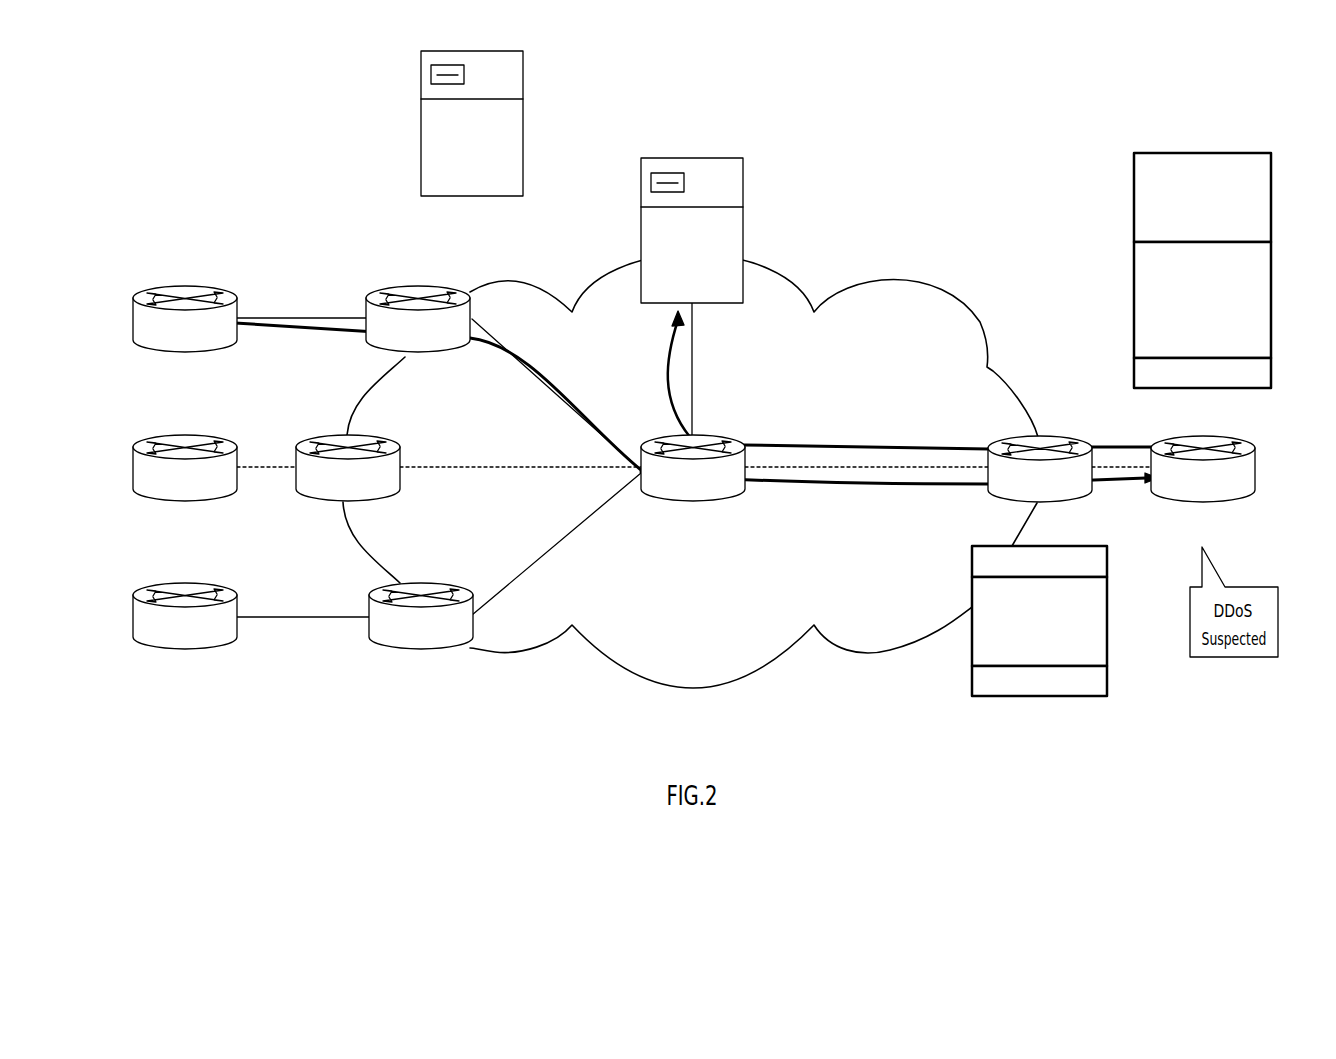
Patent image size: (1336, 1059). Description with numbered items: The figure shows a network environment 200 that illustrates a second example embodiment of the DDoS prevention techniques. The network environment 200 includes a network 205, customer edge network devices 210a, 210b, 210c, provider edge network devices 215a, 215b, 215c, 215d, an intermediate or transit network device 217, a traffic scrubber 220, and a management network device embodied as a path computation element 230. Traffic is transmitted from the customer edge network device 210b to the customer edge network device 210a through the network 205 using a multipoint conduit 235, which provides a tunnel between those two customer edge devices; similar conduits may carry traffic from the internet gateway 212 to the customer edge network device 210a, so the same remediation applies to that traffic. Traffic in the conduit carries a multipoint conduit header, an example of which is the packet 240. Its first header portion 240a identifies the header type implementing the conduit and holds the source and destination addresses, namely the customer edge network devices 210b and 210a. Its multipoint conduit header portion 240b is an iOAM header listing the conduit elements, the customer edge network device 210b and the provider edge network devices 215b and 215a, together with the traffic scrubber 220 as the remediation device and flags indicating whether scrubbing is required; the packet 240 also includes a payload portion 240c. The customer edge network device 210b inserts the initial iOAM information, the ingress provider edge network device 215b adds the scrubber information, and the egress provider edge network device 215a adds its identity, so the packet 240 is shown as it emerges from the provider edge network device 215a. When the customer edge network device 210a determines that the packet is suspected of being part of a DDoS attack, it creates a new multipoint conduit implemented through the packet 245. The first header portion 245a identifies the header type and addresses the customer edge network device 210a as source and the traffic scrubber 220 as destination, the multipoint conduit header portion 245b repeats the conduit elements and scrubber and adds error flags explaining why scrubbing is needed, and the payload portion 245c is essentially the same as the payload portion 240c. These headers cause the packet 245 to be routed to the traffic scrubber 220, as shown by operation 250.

The network environment 200 is at (1010, 68).
The network 205 is at (945, 295).
The customer edge network device 210a is at (1253, 470).
The customer edge network device 210b is at (132, 313).
The customer edge network device 210c is at (133, 467).
The internet gateway 212 is at (133, 617).
The provider edge network device 215a is at (1060, 437).
The provider edge network device 215b is at (383, 291).
The provider edge network device 215c is at (400, 455).
The provider edge network device 215d is at (425, 585).
The intermediate or transit network device 217 is at (720, 437).
The traffic scrubber 220 is at (743, 232).
The path computation element 230 is at (523, 136).
The multipoint conduit 235 is at (328, 330).
The packet 240 is at (1033, 634).
The first header portion 240a is at (1107, 567).
The multipoint conduit header portion 240b is at (1107, 630).
The payload portion 240c is at (972, 680).
The packet 245 is at (1200, 251).
The first header portion 245a is at (1271, 216).
The multipoint conduit header portion 245b is at (1271, 298).
The payload portion 245c is at (1134, 378).
The operation 250 is at (663, 388).